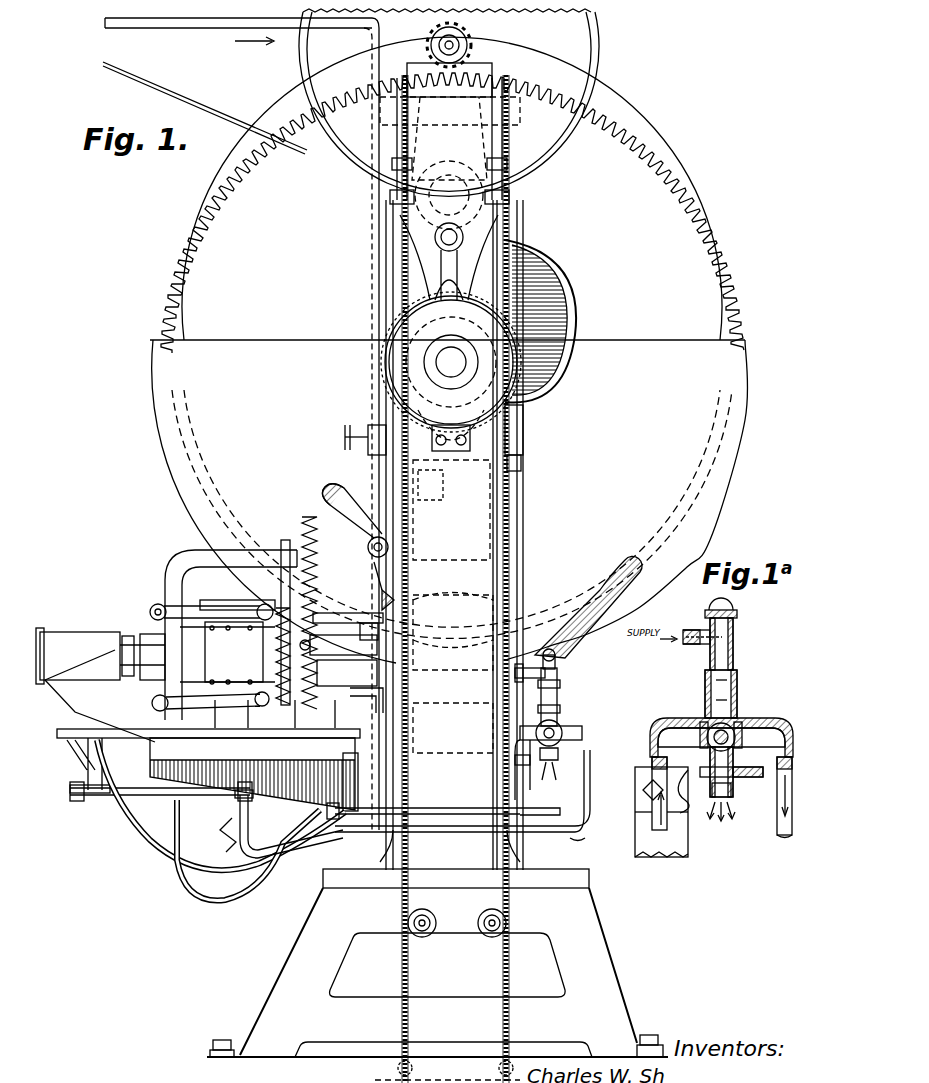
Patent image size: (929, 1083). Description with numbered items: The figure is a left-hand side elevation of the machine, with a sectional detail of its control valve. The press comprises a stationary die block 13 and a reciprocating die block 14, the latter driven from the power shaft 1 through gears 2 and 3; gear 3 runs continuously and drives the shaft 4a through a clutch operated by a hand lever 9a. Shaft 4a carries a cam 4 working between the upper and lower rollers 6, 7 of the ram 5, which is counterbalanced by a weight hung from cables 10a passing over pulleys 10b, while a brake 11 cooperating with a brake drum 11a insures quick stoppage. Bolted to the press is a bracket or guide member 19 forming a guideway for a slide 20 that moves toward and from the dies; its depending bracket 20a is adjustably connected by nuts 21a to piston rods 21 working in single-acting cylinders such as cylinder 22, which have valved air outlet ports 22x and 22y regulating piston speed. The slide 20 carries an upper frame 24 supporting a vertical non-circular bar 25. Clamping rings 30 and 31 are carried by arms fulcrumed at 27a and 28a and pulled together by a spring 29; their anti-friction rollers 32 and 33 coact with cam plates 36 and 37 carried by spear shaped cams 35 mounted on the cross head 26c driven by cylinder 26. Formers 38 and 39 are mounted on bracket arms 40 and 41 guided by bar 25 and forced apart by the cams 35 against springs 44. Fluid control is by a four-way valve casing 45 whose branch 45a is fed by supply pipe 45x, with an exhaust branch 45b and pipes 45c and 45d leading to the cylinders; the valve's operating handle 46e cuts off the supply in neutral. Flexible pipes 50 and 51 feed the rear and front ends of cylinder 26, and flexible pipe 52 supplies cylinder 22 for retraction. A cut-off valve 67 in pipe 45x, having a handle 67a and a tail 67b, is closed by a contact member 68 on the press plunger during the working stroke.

In FIG. 1, the power shaft 1 is at (462, 47).
In FIG. 1, the gear 2 is at (503, 48).
In FIG. 1, the gear 3 is at (640, 140).
In FIG. 1, the cam 4 is at (560, 325).
In FIG. 1, the shaft 4a is at (440, 365).
In FIG. 1, the ram 5 is at (506, 500).
In FIG. 1, the upper roller 6 is at (508, 232).
In FIG. 1, the lower roller 7 is at (505, 438).
In FIG. 1, the hand lever 9a is at (612, 563).
In FIG. 1, the cables 10a is at (502, 975).
In FIG. 1, the pulleys 10b is at (372, 160).
In FIG. 1, the brake 11 is at (525, 370).
In FIG. 1, the brake drum 11a is at (412, 330).
In FIG. 1, the stationary die block 13 is at (463, 730).
In FIG. 1, the reciprocating die block 14 is at (510, 572).
In FIG. 1, the bracket or guide member 19 is at (304, 760).
In FIG. 1, the slide 20 is at (60, 737).
In FIG. 1, the depending bracket 20a is at (90, 770).
In FIG. 1, the piston rods 21 is at (126, 798).
In FIG. 1, the nuts 21a is at (102, 804).
In FIG. 1, the cylinder 22 is at (244, 808).
In FIG. 1, the air outlet port 22x is at (230, 841).
In FIG. 1, the air outlet port 22y is at (300, 858).
In FIG. 1, the upper frame 24 is at (180, 566).
In FIG. 1, the vertical non-circular bar 25 is at (310, 705).
In FIG. 1, the cylinder 26 is at (78, 648).
In FIG. 1, the cross head 26c is at (155, 625).
In FIG. 1, the fulcrum 27a is at (150, 704).
In FIG. 1, the fulcrum 28a is at (163, 603).
In FIG. 1, the spring 29 is at (227, 652).
In FIG. 1, the clamping ring 30 is at (345, 705).
In FIG. 1, the clamping ring 31 is at (345, 613).
In FIG. 1, the anti-friction roller 32 is at (275, 690).
In FIG. 1, the anti-friction roller 33 is at (265, 620).
In FIG. 1, the spear shaped cams 35 is at (290, 600).
In FIG. 1, the cam plate 36 is at (232, 705).
In FIG. 1, the cam plate 37 is at (222, 622).
In FIG. 1, the former or plunger 38 is at (383, 705).
In FIG. 1, the former or plunger 39 is at (368, 623).
In FIG. 1, the bracket arm 40 is at (338, 670).
In FIG. 1, the bracket arm 41 is at (345, 622).
In FIG. 1, the springs 44 is at (340, 553).
In FIG. 1, the four-way valve casing 45 is at (556, 720).
In FIG. 1A, the four-way valve casing 45 is at (745, 724).
In FIG. 1, the branch 45a is at (557, 702).
In FIG. 1A, the branch 45a is at (745, 665).
In FIG. 1, the exhaust branch 45b is at (547, 770).
In FIG. 1A, the exhaust branch 45b is at (732, 790).
In FIG. 1, the pipe 45c is at (320, 810).
In FIG. 1A, the pipe 45c is at (655, 760).
In FIG. 1, the pipe 45d is at (590, 815).
In FIG. 1A, the pipe 45d is at (781, 815).
In FIG. 1, the supply pipe 45x is at (305, 26).
In FIG. 1, the operating handle 46e is at (556, 672).
In FIG. 1A, the operating handle 46e is at (746, 612).
In FIG. 1, the flexible pipe 50 is at (80, 710).
In FIG. 1, the flexible pipe 51 is at (170, 842).
In FIG. 1, the flexible pipe 52 is at (205, 903).
In FIG. 1, the cut-off valve 67 is at (372, 536).
In FIG. 1, the operating handle 67a is at (318, 500).
In FIG. 1, the tail 67b is at (470, 572).
In FIG. 1, the contact member 68 is at (420, 490).